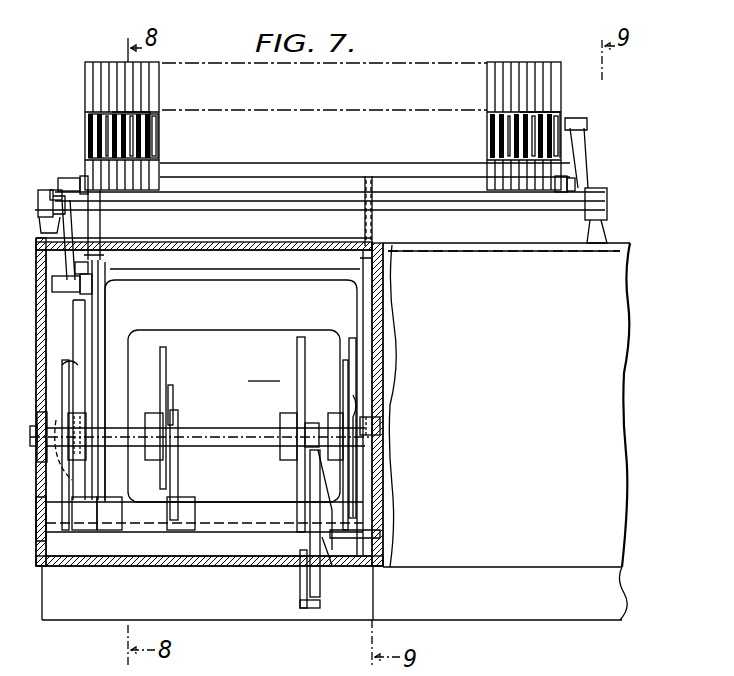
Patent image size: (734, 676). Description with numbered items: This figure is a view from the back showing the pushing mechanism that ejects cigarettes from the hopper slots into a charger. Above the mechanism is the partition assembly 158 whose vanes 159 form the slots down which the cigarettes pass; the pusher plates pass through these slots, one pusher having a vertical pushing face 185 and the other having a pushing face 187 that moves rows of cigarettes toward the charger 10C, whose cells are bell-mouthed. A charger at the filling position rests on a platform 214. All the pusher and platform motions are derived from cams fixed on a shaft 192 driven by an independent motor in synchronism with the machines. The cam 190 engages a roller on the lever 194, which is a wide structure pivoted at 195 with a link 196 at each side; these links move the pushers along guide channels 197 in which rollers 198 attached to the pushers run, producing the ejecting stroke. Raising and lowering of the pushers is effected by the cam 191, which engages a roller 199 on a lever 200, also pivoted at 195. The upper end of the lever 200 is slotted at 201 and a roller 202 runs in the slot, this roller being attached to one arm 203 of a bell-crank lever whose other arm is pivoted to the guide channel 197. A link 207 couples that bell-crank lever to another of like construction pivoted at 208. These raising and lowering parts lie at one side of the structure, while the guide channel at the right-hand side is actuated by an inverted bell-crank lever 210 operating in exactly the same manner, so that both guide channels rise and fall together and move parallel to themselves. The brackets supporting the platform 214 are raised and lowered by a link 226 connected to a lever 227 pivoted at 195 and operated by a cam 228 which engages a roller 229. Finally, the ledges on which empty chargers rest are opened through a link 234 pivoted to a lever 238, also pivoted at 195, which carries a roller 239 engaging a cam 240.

The partition assembly 158 is at (168, 62).
The vanes 159 is at (150, 100).
The vertical pushing face 185 is at (498, 145).
The pushing face 187 is at (152, 146).
The charger 10C is at (98, 110).
The platform 214 is at (318, 163).
The pivot 208 is at (276, 204).
The arm of bell-crank lever 203 is at (66, 232).
The rollers 198 is at (76, 174).
The guide channels 197 is at (62, 189).
The bell-crank lever 210 is at (584, 186).
The links 196 is at (362, 224).
The lever 194 is at (353, 338).
The cam 190 is at (348, 373).
The roller 229 is at (378, 405).
The cam 191 is at (68, 405).
The lever 200 is at (80, 368).
The link 207 is at (65, 310).
The slot 201 is at (86, 280).
The roller 202 is at (92, 292).
The link 234 is at (166, 350).
The cam 240 is at (171, 406).
The roller 239 is at (174, 468).
The lever 238 is at (177, 488).
The roller 199 is at (70, 450).
The pivot 195 is at (254, 517).
The cam 228 is at (298, 372).
The shaft 192 is at (256, 520).
The lever 227 is at (330, 548).
The link 226 is at (300, 577).